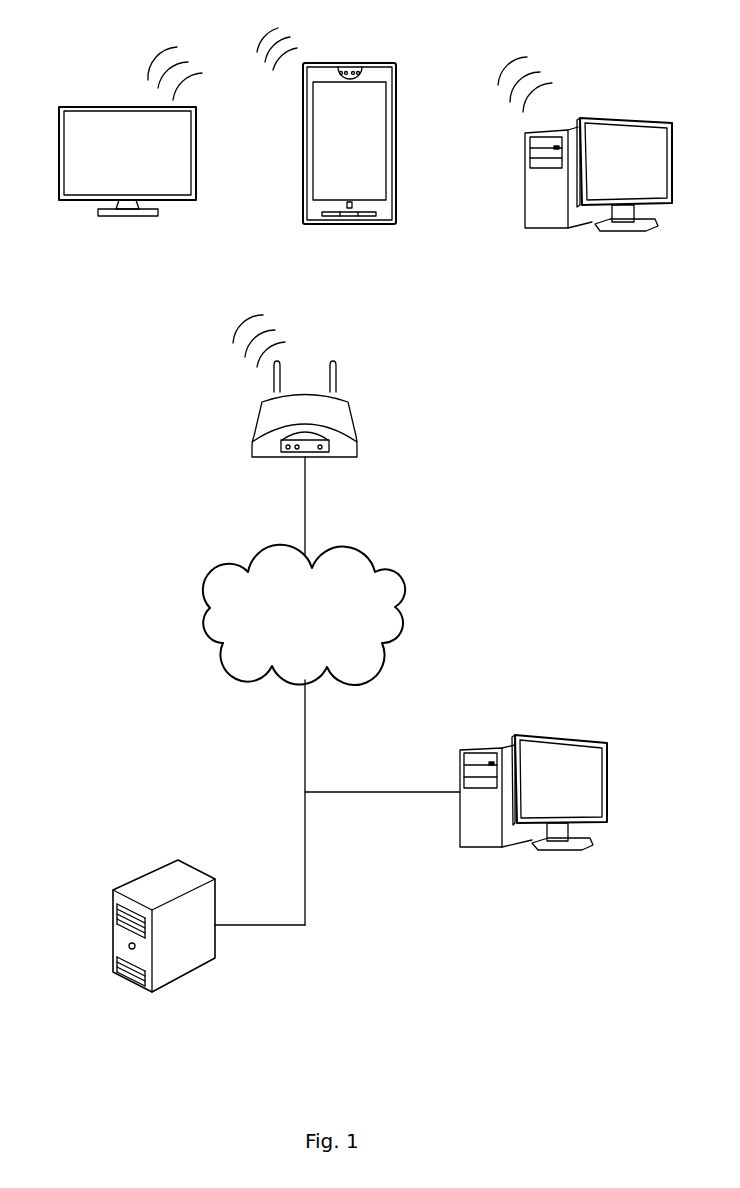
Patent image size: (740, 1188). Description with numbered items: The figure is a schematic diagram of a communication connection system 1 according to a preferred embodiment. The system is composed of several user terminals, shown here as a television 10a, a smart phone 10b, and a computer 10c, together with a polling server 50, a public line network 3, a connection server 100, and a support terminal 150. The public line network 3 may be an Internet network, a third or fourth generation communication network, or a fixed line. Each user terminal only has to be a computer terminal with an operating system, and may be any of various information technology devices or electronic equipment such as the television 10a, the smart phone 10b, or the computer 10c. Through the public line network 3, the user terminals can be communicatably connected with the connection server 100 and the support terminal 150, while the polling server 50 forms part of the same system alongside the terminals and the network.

The communication connection system 1 is at (610, 535).
The public line network 3 is at (372, 568).
The television 10a is at (82, 107).
The smart phone 10b is at (344, 63).
The computer 10c is at (615, 118).
The polling server 50 is at (333, 362).
The connection server 100 is at (178, 860).
The support terminal 150 is at (588, 738).